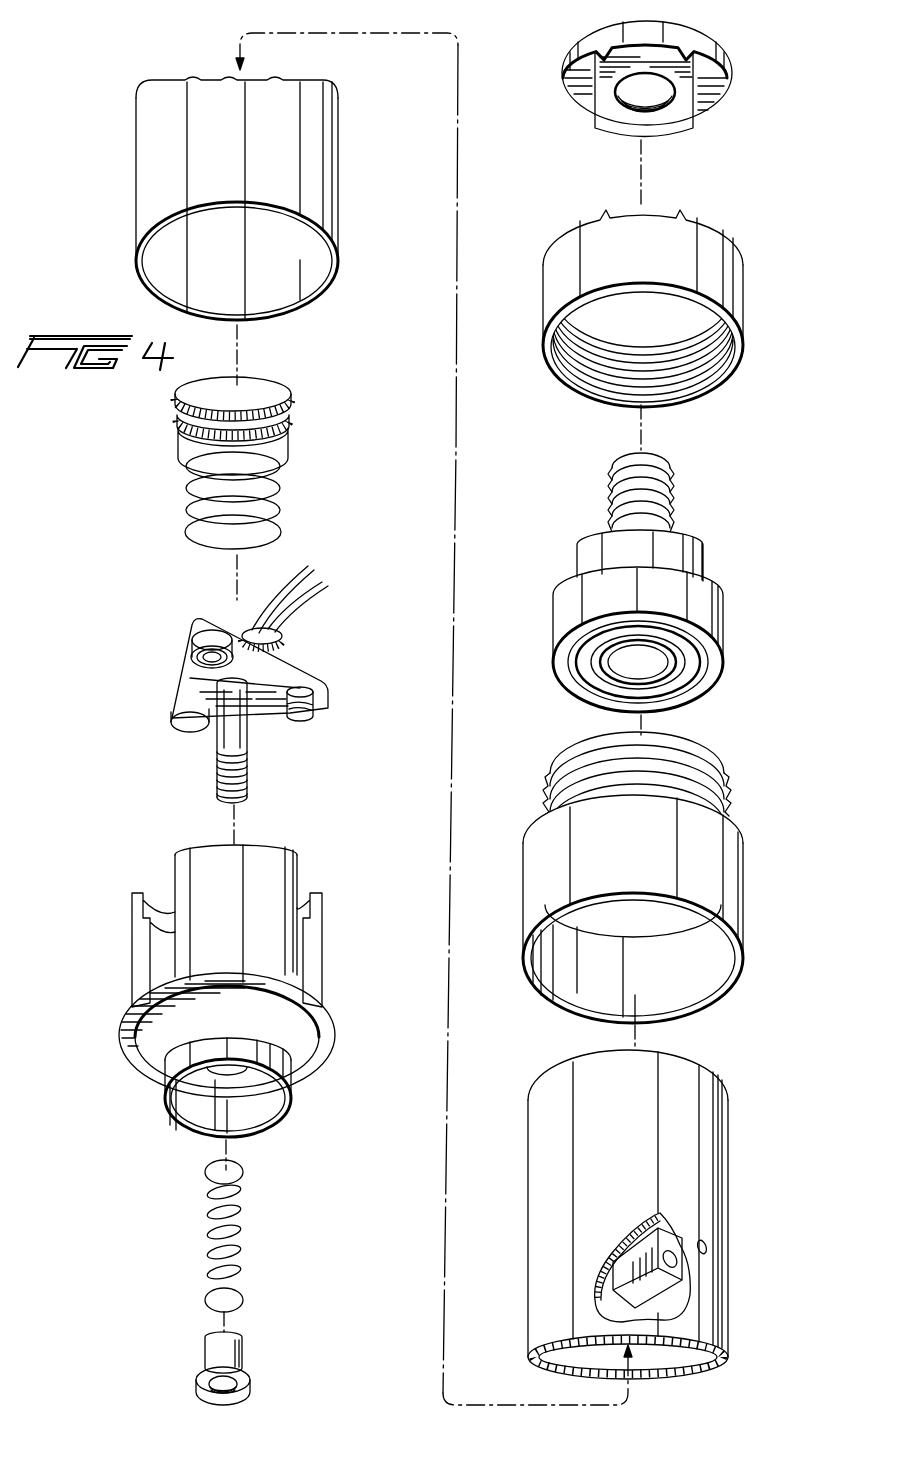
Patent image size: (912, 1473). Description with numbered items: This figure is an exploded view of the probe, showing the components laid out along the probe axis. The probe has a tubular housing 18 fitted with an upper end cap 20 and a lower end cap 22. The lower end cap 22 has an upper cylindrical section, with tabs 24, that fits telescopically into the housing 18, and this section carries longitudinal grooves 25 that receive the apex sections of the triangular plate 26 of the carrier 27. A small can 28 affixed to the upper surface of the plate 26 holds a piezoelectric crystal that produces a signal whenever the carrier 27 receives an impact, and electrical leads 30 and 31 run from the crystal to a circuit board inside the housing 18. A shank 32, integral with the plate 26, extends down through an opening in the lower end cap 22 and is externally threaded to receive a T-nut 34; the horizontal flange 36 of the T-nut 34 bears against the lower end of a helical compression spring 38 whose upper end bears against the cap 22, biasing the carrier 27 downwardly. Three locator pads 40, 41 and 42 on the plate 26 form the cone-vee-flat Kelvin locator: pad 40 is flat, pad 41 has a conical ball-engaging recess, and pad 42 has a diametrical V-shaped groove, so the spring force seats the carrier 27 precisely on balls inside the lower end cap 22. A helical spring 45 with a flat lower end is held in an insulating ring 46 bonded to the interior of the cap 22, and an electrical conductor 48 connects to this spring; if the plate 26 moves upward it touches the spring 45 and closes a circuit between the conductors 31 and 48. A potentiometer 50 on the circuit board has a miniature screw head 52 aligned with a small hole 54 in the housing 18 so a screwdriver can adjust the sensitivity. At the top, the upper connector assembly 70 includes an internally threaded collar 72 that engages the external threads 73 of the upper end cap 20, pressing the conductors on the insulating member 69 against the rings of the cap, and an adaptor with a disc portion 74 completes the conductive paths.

The tubular housing 18 is at (322, 195).
The upper end cap 20 is at (723, 870).
The lower end cap 22 is at (327, 1047).
The tab 24 is at (313, 952).
The longitudinal grooves 25 is at (300, 883).
The triangular plate 26 is at (300, 667).
The carrier 27 is at (336, 667).
The can 28 is at (277, 638).
The electrical lead 30 is at (320, 592).
The electrical lead 31 is at (292, 587).
The shank 32 is at (243, 740).
The T-nut 34 is at (240, 1352).
The horizontal flange 36 is at (250, 1385).
The helical compression spring 38 is at (240, 1223).
The locator pad 40 is at (182, 728).
The locator pad 41 is at (210, 657).
The locator pad 42 is at (318, 697).
The helical spring 45 is at (277, 485).
The ring 46 is at (290, 417).
The electrical conductor 48 is at (244, 426).
The potentiometer 50 is at (632, 1265).
The screw head 52 is at (669, 1255).
The hole 54 is at (707, 1248).
The insulating member 69 is at (712, 682).
The upper connector assembly 70 is at (713, 618).
The internally threaded collar 72 is at (728, 262).
The external threads 73 is at (718, 792).
The disc portion 74 is at (717, 82).